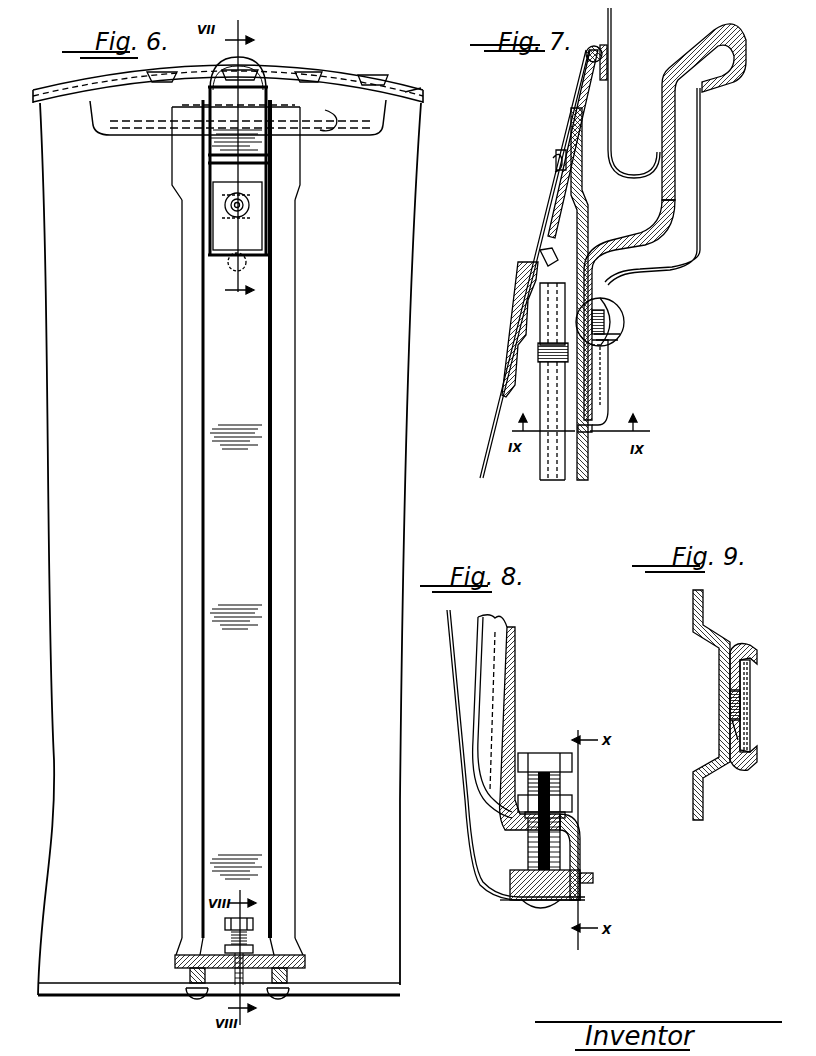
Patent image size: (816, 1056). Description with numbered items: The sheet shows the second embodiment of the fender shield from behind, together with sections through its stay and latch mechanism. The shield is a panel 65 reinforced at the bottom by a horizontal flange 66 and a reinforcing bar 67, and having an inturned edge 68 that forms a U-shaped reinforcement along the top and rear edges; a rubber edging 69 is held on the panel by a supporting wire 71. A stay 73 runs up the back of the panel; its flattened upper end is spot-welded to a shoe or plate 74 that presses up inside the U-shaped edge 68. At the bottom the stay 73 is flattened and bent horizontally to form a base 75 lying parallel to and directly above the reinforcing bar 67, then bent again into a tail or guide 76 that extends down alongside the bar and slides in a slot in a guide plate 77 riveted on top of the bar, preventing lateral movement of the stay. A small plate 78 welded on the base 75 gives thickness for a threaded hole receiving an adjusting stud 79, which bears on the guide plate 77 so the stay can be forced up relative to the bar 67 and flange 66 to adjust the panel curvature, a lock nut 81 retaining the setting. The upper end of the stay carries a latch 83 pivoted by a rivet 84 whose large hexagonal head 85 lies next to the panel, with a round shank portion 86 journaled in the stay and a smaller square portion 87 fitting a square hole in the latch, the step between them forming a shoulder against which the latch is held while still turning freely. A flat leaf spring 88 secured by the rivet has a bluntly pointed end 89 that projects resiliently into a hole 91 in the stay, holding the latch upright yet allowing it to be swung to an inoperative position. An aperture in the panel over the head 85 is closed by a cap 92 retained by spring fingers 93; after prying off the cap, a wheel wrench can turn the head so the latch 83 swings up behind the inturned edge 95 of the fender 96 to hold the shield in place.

In FIG. 6, the panel 65 is at (393, 392).
In FIG. 7, the panel 65 is at (483, 458).
In FIG. 8, the panel 65 is at (458, 754).
In FIG. 6, the horizontal flange 66 is at (352, 990).
In FIG. 8, the horizontal flange 66 is at (520, 903).
In FIG. 6, the reinforcing bar 67 is at (396, 990).
In FIG. 8, the reinforcing bar 67 is at (508, 902).
In FIG. 7, the inturned edge 68 is at (593, 46).
In FIG. 6, the rubber edging 69 is at (406, 94).
In FIG. 7, the rubber edging 69 is at (606, 37).
In FIG. 6, the supporting wire 71 is at (378, 123).
In FIG. 7, the supporting wire 71 is at (555, 167).
In FIG. 6, the stay 73 is at (258, 527).
In FIG. 7, the stay 73 is at (580, 474).
In FIG. 8, the stay 73 is at (497, 660).
In FIG. 9, the stay 73 is at (693, 616).
In FIG. 6, the shoe or plate 74 is at (326, 128).
In FIG. 7, the shoe or plate 74 is at (573, 100).
In FIG. 8, the base 75 is at (580, 823).
In FIG. 6, the tail or guide 76 is at (218, 986).
In FIG. 8, the tail or guide 76 is at (582, 862).
In FIG. 6, the guide plate 77 is at (187, 984).
In FIG. 8, the guide plate 77 is at (593, 878).
In FIG. 8, the small plate 78 is at (566, 816).
In FIG. 6, the adjusting stud 79 is at (254, 924).
In FIG. 8, the adjusting stud 79 is at (546, 757).
In FIG. 6, the lock nut 81 is at (254, 949).
In FIG. 8, the lock nut 81 is at (556, 802).
In FIG. 6, the latch 83 is at (255, 119).
In FIG. 7, the latch 83 is at (682, 170).
In FIG. 9, the latch 83 is at (740, 656).
In FIG. 6, the rivet 84 is at (226, 206).
In FIG. 7, the rivet 84 is at (616, 304).
In FIG. 7, the hexagonal head 85 is at (545, 307).
In FIG. 7, the round portion 86 is at (612, 336).
In FIG. 7, the square portion 87 is at (604, 318).
In FIG. 6, the flat leaf spring 88 is at (254, 227).
In FIG. 7, the flat leaf spring 88 is at (598, 402).
In FIG. 9, the flat leaf spring 88 is at (752, 695).
In FIG. 7, the bluntly pointed end 89 is at (582, 435).
In FIG. 9, the bluntly pointed end 89 is at (733, 705).
In FIG. 6, the hole 91 is at (249, 267).
In FIG. 7, the hole 91 is at (557, 442).
In FIG. 9, the hole 91 is at (730, 722).
In FIG. 7, the cap 92 is at (518, 272).
In FIG. 7, the spring fingers 93 is at (550, 250).
In FIG. 7, the inturned edge 95 is at (655, 160).
In FIG. 7, the fender 96 is at (613, 20).